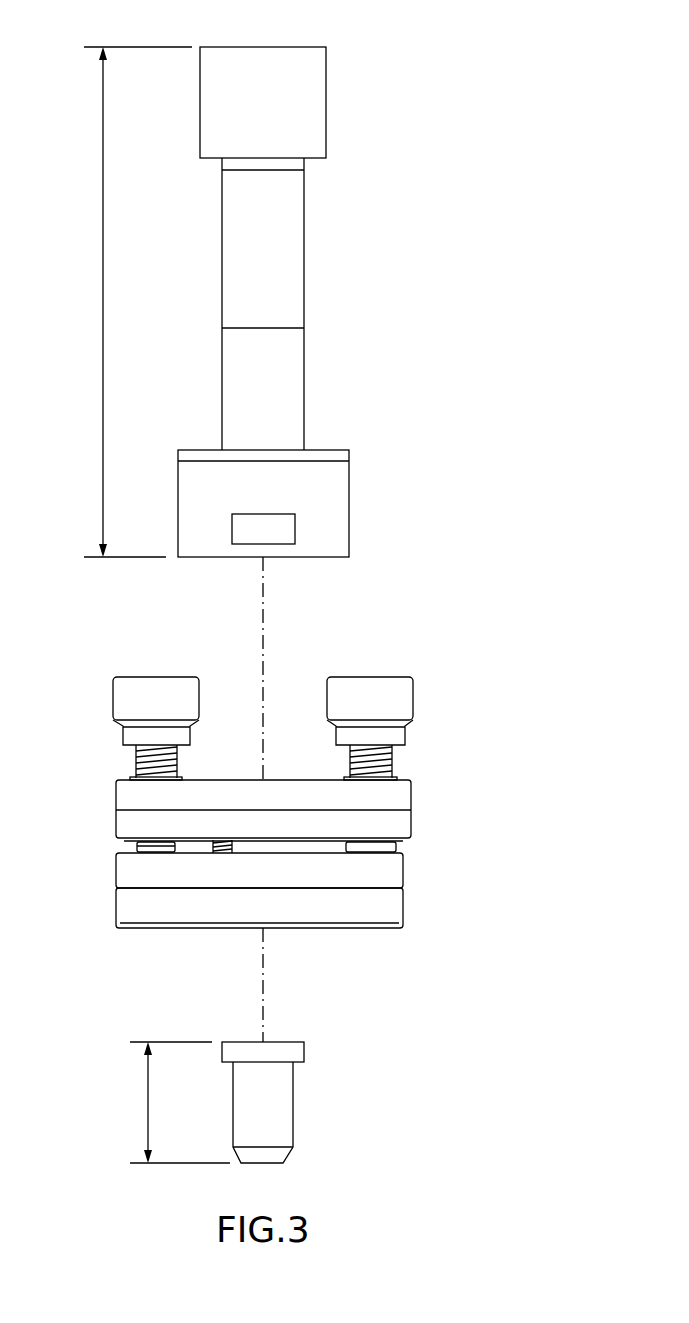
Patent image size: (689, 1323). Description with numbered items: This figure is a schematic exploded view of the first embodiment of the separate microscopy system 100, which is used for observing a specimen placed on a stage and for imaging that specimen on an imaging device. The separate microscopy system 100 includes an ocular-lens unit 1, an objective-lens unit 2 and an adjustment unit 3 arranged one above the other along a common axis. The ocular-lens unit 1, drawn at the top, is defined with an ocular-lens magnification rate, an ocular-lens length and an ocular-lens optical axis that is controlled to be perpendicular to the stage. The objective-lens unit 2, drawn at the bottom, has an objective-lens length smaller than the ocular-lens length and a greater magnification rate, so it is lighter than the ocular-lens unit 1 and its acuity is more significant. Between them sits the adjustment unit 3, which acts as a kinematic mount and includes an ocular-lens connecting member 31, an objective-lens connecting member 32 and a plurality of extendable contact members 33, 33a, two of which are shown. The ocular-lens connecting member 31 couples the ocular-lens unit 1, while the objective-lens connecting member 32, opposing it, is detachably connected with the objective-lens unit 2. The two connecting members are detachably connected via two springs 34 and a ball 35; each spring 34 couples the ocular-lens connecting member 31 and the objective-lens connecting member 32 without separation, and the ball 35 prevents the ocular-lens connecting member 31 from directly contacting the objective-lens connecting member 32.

The separate microscopy system 100 is at (492, 78).
The ocular-lens unit 1 is at (316, 107).
The objective-lens unit 2 is at (285, 1110).
The adjustment unit 3 is at (486, 746).
The ocular-lens connecting member 31 is at (400, 797).
The objective-lens connecting member 32 is at (398, 910).
The extendable contact member 33 is at (407, 700).
The extendable contact member 33a is at (122, 698).
The spring 34 is at (217, 852).
The ball 35 is at (403, 843).